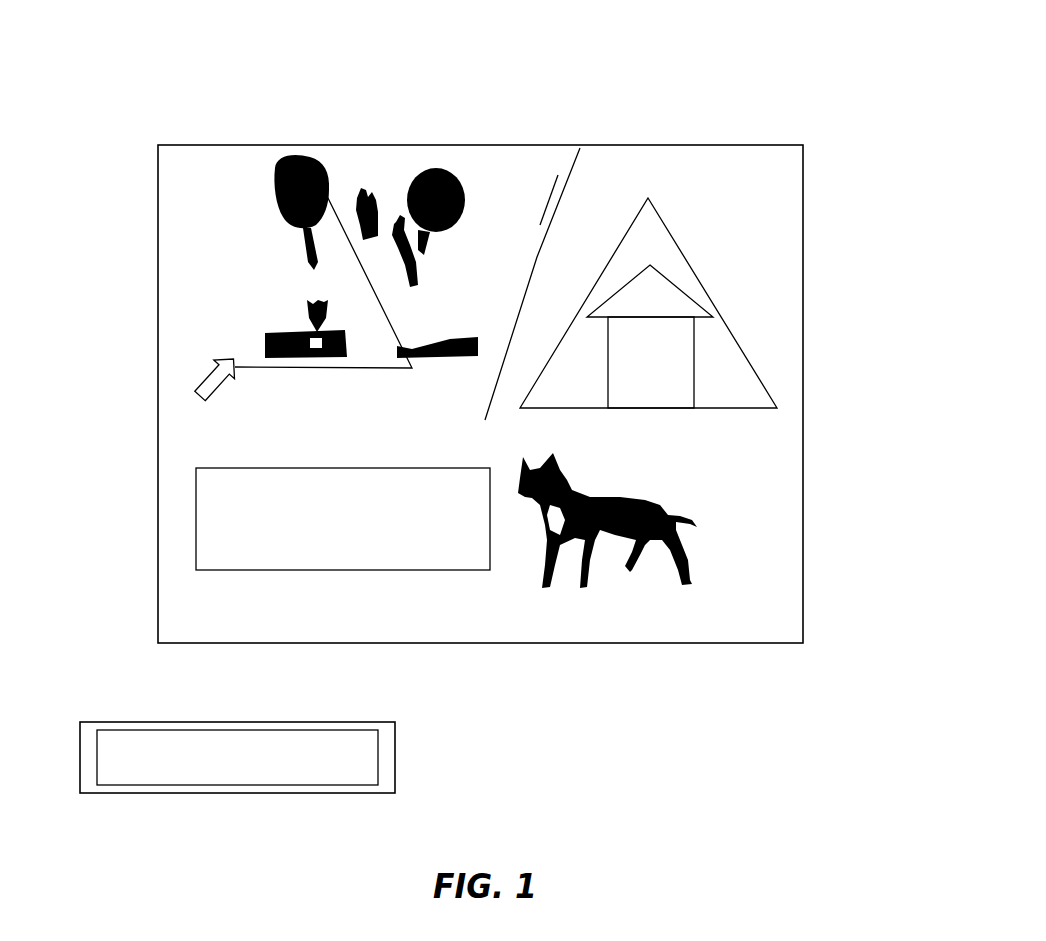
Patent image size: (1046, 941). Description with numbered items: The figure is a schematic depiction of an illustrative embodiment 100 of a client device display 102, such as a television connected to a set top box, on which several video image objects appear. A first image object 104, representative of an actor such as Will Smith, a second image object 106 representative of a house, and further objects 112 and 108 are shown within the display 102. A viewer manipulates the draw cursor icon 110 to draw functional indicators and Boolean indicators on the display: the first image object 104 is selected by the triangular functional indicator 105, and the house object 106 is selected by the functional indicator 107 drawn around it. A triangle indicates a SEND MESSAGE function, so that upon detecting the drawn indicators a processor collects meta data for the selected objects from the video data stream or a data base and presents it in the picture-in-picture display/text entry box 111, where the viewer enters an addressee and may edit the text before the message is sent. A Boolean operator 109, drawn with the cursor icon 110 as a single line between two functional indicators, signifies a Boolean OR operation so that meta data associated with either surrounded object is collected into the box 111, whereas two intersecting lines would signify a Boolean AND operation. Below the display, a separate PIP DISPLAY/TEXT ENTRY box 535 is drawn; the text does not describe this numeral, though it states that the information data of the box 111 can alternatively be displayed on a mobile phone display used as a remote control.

The illustrative embodiment 100 is at (714, 106).
The client device display 102 is at (735, 182).
The first image object 104 is at (248, 265).
The functional indicator 105 is at (235, 367).
The second image object 106 is at (694, 340).
The functional indicator 107 is at (678, 263).
The image object 108 is at (675, 519).
The Boolean operator 109 is at (580, 148).
The draw cursor icon 110 is at (192, 390).
The picture-in-picture display/text entry box 111 is at (211, 558).
The image object 112 is at (463, 182).
The PIP display/text entry box 535 is at (138, 722).